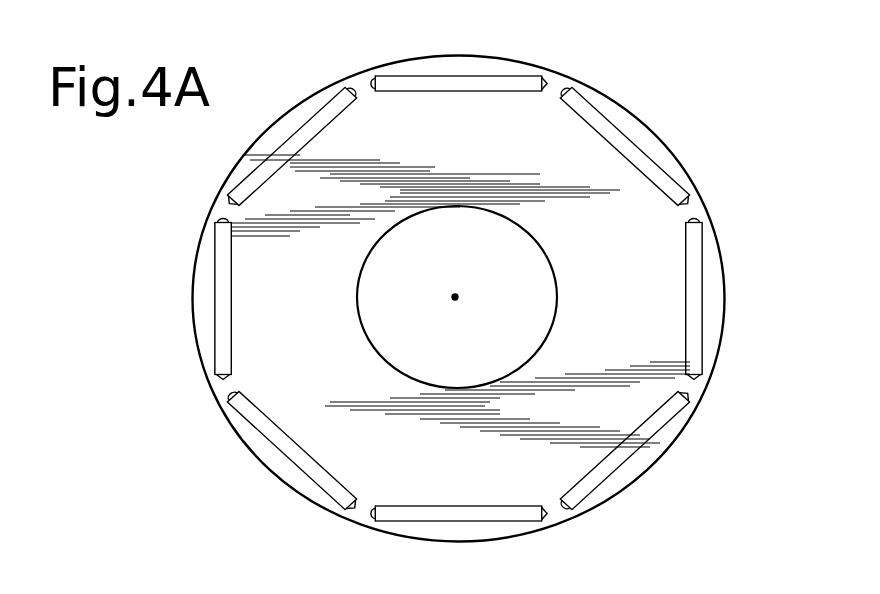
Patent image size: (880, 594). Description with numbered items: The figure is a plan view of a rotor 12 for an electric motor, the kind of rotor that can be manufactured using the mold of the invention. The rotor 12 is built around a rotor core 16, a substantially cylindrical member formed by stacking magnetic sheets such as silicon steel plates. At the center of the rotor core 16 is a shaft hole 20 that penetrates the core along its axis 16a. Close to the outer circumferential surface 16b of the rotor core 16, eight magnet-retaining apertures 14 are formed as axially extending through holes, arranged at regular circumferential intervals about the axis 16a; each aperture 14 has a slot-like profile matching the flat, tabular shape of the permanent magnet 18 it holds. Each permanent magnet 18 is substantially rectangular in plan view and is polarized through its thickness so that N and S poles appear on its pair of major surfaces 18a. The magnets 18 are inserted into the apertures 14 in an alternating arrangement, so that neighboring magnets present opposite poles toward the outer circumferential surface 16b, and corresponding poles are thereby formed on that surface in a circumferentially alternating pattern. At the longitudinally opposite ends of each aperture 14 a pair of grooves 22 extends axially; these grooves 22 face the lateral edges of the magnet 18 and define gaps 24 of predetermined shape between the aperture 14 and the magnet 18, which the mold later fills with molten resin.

The rotor 12 is at (653, 60).
The magnet-retaining aperture 14 is at (700, 348).
The rotor core 16 is at (306, 89).
The axis 16a is at (457, 298).
The outer circumferential surface 16b is at (705, 204).
The permanent magnet 18 is at (240, 185).
The major surface 18a is at (226, 353).
The shaft hole 20 is at (484, 212).
The groove 22 is at (697, 384).
The gap 24 is at (558, 513).